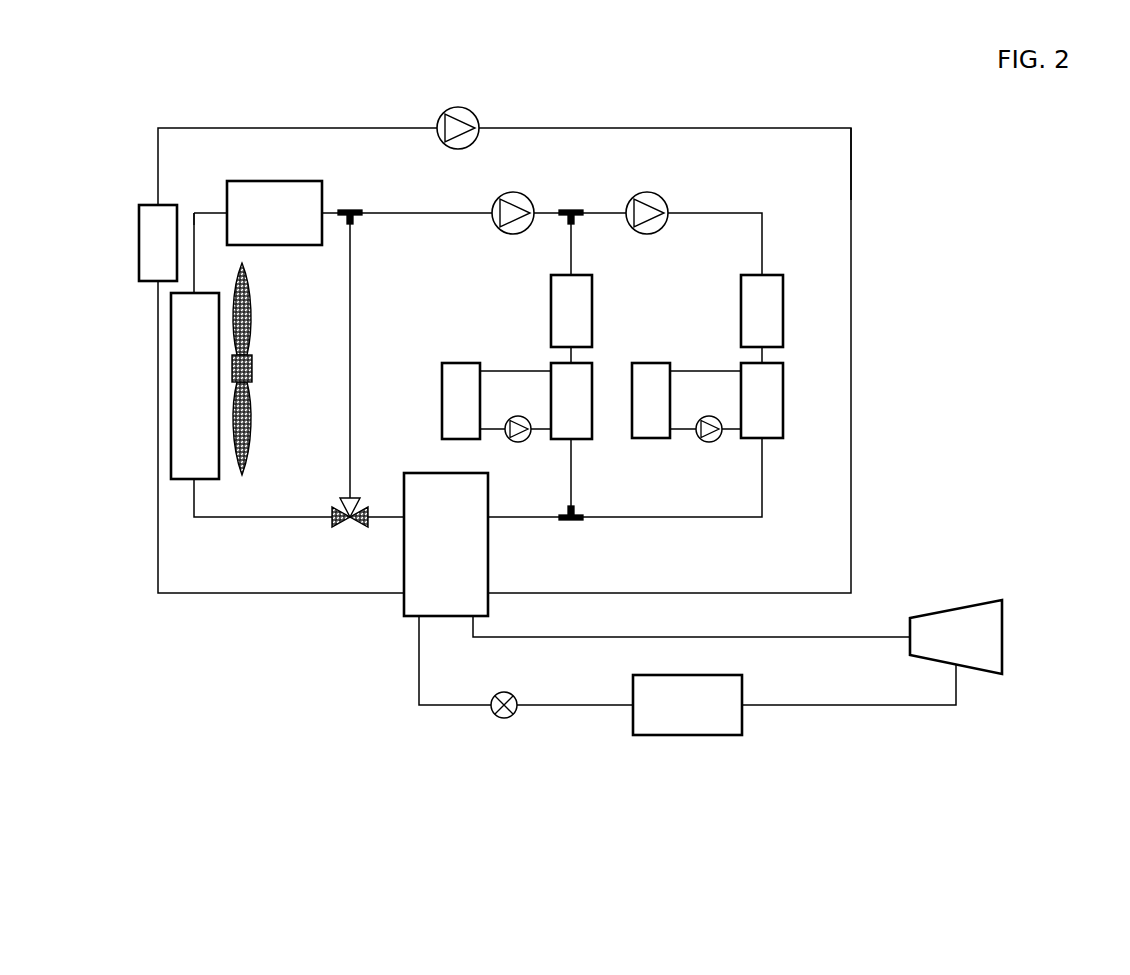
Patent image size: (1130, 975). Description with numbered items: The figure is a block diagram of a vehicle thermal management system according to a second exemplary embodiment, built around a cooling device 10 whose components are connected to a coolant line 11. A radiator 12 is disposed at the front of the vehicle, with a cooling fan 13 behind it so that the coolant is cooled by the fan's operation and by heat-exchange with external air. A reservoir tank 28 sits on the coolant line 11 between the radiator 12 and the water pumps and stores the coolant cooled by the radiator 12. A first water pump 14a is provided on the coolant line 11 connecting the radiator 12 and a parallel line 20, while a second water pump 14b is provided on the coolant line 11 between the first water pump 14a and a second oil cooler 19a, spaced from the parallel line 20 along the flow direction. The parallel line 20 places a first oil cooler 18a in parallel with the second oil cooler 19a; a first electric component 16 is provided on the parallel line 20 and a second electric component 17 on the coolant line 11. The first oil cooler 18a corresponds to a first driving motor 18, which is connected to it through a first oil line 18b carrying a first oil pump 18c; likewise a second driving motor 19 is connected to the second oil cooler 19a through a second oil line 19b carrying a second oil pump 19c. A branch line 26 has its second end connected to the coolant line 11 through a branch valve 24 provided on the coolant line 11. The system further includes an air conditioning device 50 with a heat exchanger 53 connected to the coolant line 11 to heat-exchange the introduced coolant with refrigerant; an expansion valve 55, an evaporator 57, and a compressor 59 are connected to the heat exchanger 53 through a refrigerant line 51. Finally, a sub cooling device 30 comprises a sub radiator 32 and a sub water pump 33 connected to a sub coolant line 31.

The cooling device 10 is at (758, 196).
The coolant line 11 is at (205, 213).
The radiator 12 is at (219, 477).
The cooling fan 13 is at (250, 310).
The first water pump 14a is at (524, 195).
The second water pump 14b is at (660, 195).
The first electric component 16 is at (592, 312).
The second electric component 17 is at (783, 312).
The first driving motor 18 is at (442, 402).
The first oil cooler 18a is at (582, 440).
The first oil line 18b is at (492, 429).
The first oil pump 18c is at (518, 443).
The second driving motor 19 is at (648, 440).
The second oil cooler 19a is at (783, 400).
The second oil line 19b is at (682, 429).
The second oil pump 19c is at (709, 443).
The parallel line 20 is at (571, 252).
The branch valve 24 is at (350, 527).
The branch line 26 is at (350, 320).
The reservoir tank 28 is at (275, 181).
The sub cooling device 30 is at (823, 116).
The sub coolant line 31 is at (610, 127).
The sub radiator 32 is at (139, 246).
The sub water pump 33 is at (470, 112).
The air conditioning device 50 is at (891, 600).
The refrigerant line 51 is at (552, 637).
The heat exchanger 53 is at (488, 548).
The expansion valve 55 is at (492, 712).
The evaporator 57 is at (745, 728).
The compressor 59 is at (1002, 637).